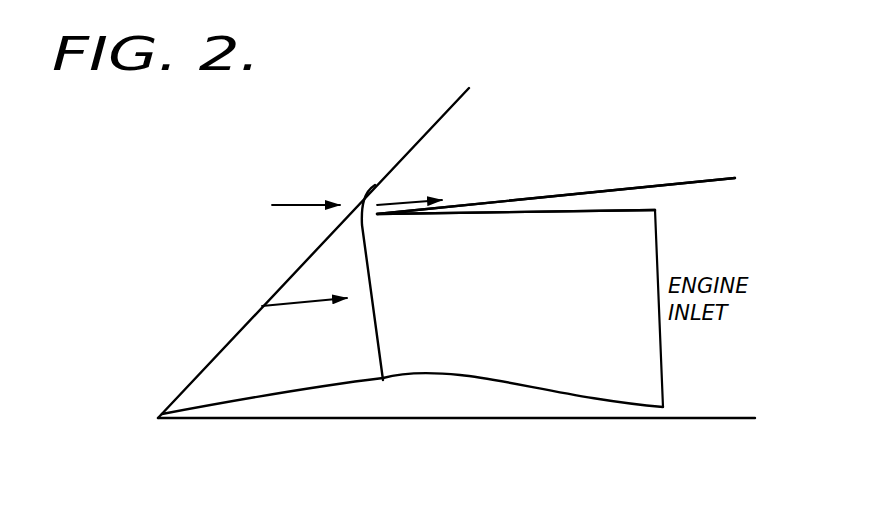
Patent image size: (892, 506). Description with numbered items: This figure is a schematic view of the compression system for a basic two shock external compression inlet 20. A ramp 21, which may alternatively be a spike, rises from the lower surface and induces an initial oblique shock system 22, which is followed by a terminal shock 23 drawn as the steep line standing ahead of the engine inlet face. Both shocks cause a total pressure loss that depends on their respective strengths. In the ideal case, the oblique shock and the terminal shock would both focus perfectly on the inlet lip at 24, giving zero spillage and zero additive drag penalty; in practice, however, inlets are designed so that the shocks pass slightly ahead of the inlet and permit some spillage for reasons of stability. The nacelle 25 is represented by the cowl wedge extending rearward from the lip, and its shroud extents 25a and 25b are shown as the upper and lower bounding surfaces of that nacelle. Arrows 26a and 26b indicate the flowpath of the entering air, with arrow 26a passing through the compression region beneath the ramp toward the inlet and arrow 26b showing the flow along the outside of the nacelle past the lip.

The two shock external compression inlet 20 is at (287, 357).
The ramp 21 is at (236, 400).
The oblique shock system 22 is at (289, 271).
The terminal shock 23 is at (380, 316).
The inlet lip 24 is at (380, 222).
The nacelle 25 is at (681, 174).
The shroud extent 25a is at (598, 191).
The shroud extent 25b is at (620, 419).
The arrow 26a is at (262, 306).
The arrow 26b is at (294, 205).